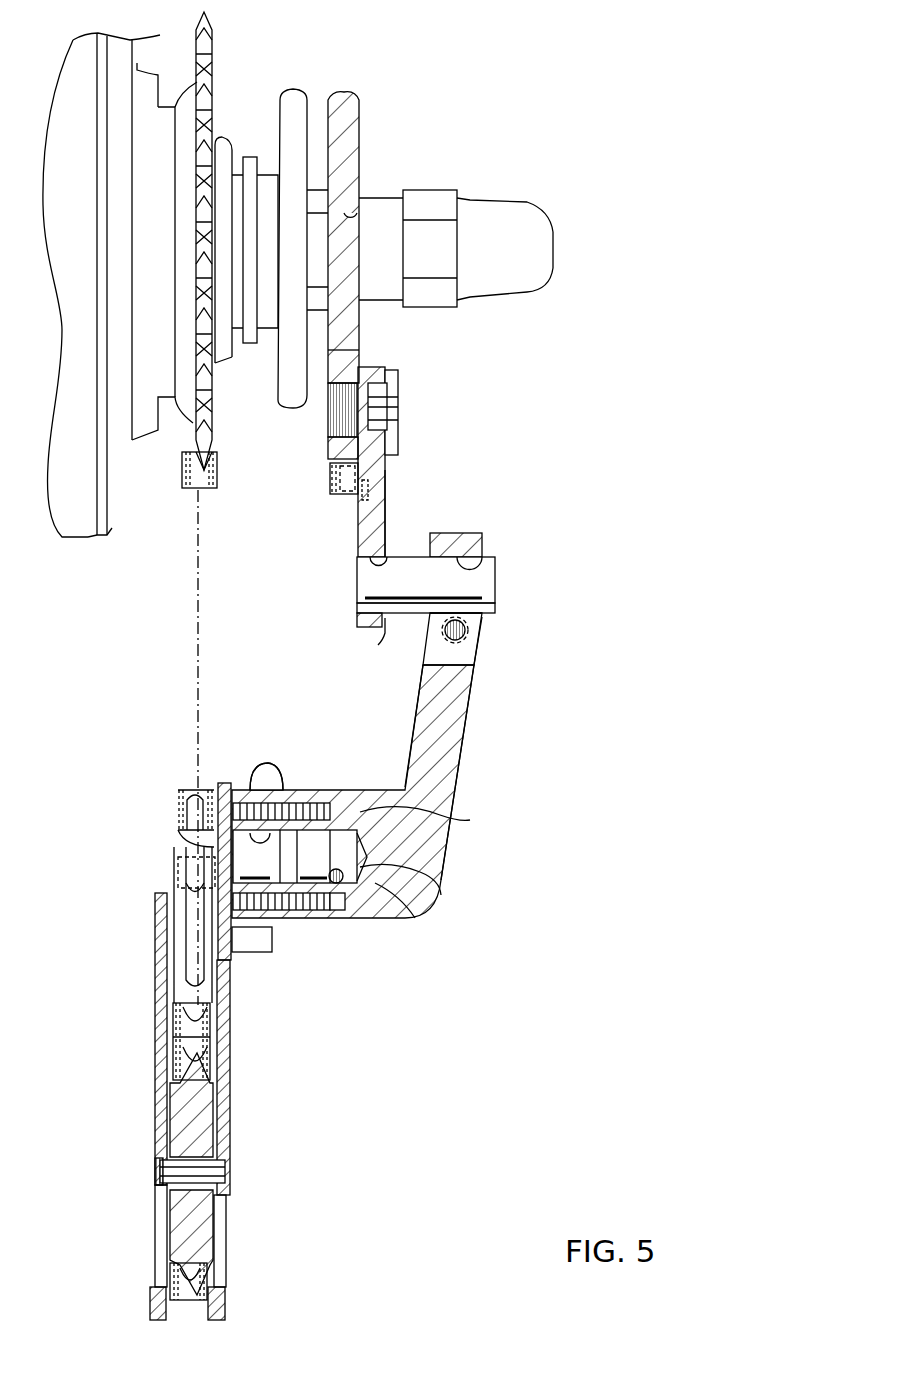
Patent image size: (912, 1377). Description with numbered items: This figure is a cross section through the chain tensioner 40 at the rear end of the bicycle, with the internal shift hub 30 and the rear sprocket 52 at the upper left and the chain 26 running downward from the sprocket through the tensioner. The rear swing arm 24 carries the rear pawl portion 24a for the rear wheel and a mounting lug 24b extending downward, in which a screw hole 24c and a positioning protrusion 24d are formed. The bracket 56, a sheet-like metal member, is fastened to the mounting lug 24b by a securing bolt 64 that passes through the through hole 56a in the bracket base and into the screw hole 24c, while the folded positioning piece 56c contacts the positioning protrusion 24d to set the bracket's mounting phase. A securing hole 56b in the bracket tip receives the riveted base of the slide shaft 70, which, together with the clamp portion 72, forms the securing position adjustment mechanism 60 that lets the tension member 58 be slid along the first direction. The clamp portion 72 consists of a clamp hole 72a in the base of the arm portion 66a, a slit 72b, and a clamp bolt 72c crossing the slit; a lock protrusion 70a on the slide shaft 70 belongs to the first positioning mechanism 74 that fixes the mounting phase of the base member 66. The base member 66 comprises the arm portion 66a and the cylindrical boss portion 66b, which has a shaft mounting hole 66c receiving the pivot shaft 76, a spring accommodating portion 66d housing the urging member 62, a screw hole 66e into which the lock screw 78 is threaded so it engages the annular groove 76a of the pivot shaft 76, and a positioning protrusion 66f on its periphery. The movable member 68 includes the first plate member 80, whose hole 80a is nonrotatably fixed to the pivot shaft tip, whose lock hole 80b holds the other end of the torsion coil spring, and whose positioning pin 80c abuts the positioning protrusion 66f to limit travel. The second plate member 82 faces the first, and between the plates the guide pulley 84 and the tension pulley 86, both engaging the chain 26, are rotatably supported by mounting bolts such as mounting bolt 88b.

The rear swing arm 24 is at (378, 121).
The rear pawl portion 24a is at (383, 195).
The mounting lug 24b is at (323, 375).
The screw hole 24c is at (330, 494).
The positioning protrusion 24d is at (330, 497).
The chain 26 is at (197, 680).
The internal shift hub 30 is at (73, 520).
The chain tensioner 40 is at (588, 717).
The rear sprocket 52 is at (205, 64).
The bracket 56 is at (403, 489).
The through hole 56a is at (383, 378).
The securing hole 56b is at (403, 545).
The positioning piece 56c is at (343, 497).
The tension member 58 is at (590, 900).
The securing position adjustment mechanism 60 is at (506, 552).
The urging member 62 is at (307, 828).
The securing bolt 64 is at (399, 384).
The base member 66 is at (450, 893).
The arm portion 66a is at (463, 744).
The boss portion 66b is at (360, 797).
The shaft mounting hole 66c is at (281, 800).
The spring accommodating portion 66d is at (300, 917).
The screw hole 66e is at (347, 917).
The positioning protrusion 66f is at (257, 767).
The movable member 68 is at (262, 1044).
The slide shaft 70 is at (412, 570).
The lock protrusion 70a is at (407, 613).
The clamp portion 72 is at (514, 623).
The clamp hole 72a is at (497, 578).
The slit 72b is at (463, 653).
The clamp bolt 72c is at (462, 634).
The first positioning mechanism 74 is at (503, 610).
The pivot shaft 76 is at (380, 900).
The annular groove 76a is at (470, 820).
The lock screw 78 is at (345, 872).
The first plate member 80 is at (240, 1123).
The hole 80a is at (176, 846).
The lock hole 80b is at (220, 790).
The positioning pin 80c is at (247, 953).
The second plate member 82 is at (157, 1087).
The guide pulley 84 is at (170, 857).
The tension pulley 86 is at (153, 1213).
The mounting bolt 88b is at (225, 1168).